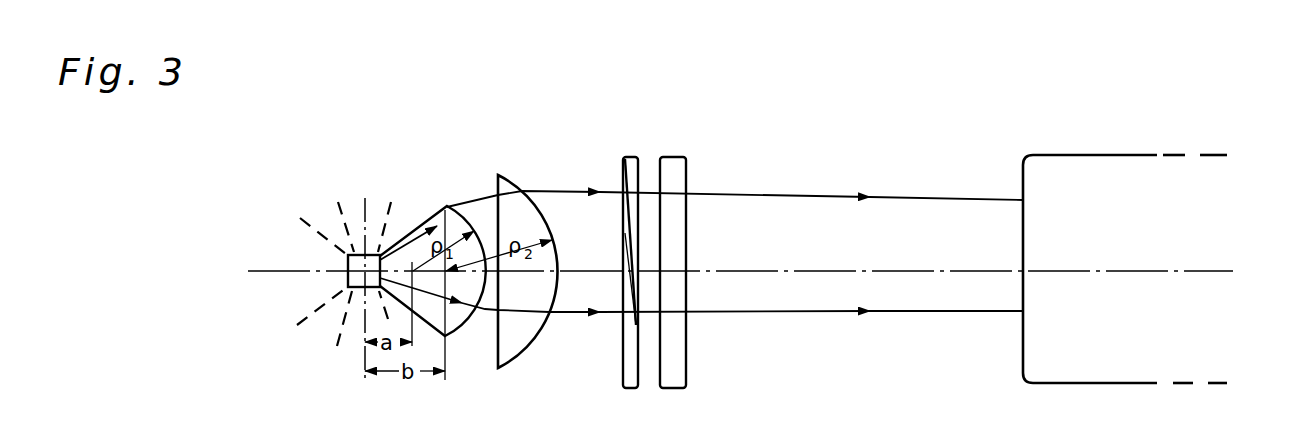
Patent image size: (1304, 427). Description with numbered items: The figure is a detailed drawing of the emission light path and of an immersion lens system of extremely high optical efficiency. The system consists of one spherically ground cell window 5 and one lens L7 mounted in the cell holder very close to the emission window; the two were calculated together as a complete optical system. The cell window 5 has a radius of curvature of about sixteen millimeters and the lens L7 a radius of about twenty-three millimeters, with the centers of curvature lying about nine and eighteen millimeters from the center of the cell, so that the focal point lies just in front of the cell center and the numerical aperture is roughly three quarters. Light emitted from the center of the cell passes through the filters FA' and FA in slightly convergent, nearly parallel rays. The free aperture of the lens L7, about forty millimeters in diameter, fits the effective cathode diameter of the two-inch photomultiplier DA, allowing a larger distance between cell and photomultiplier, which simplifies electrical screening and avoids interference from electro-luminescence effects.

The spherically ground cell window 5 is at (437, 214).
The lens L7 is at (522, 245).
The filter FA' is at (623, 242).
The filter FA is at (677, 242).
The photomultiplier DA is at (1125, 269).